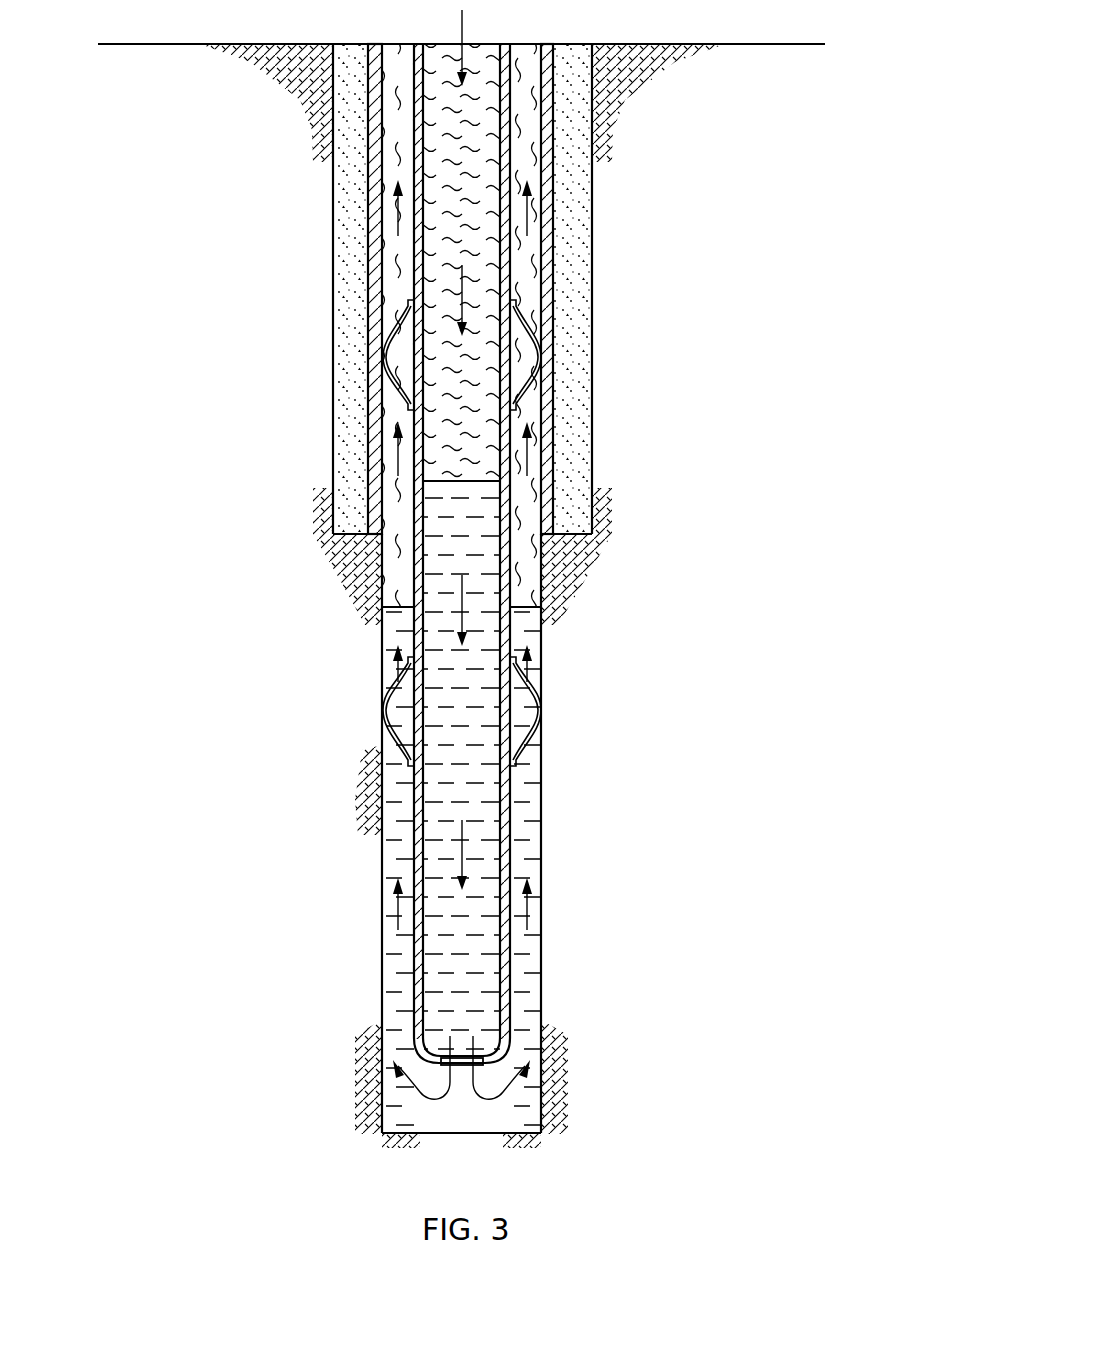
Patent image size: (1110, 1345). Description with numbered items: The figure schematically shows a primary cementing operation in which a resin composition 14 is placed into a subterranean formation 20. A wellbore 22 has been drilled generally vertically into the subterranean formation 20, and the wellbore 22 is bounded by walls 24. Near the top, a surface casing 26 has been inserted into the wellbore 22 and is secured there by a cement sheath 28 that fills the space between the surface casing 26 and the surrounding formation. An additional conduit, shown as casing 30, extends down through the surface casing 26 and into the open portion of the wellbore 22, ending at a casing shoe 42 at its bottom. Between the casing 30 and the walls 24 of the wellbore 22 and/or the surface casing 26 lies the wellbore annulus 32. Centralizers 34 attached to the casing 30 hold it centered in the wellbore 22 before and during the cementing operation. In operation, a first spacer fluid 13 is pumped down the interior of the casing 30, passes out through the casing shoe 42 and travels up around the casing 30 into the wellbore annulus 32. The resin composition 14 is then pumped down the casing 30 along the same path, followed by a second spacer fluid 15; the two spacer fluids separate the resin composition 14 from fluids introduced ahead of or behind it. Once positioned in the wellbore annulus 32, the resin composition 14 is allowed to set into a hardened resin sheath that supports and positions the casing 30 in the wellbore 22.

The first spacer fluid 13 is at (400, 497).
The resin composition 14 is at (480, 797).
The second spacer fluid 15 is at (450, 118).
The subterranean formation 20 is at (351, 809).
The wellbore 22 is at (316, 190).
The walls 24 is at (548, 580).
The surface casing 26 is at (553, 188).
The cement sheath 28 is at (576, 217).
The casing 30 is at (541, 698).
The wellbore annulus 32 is at (385, 613).
The centralizers 34 is at (402, 325).
The casing shoe 42 is at (511, 1040).